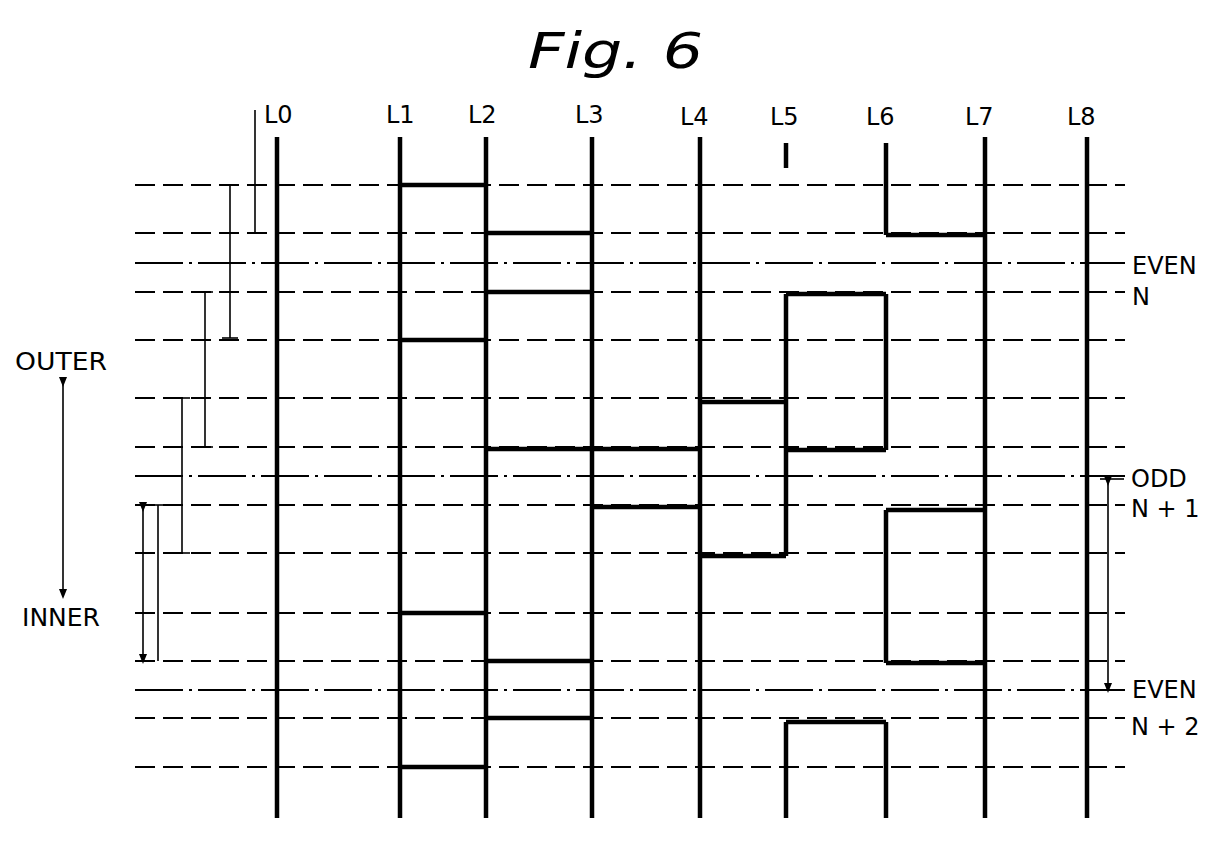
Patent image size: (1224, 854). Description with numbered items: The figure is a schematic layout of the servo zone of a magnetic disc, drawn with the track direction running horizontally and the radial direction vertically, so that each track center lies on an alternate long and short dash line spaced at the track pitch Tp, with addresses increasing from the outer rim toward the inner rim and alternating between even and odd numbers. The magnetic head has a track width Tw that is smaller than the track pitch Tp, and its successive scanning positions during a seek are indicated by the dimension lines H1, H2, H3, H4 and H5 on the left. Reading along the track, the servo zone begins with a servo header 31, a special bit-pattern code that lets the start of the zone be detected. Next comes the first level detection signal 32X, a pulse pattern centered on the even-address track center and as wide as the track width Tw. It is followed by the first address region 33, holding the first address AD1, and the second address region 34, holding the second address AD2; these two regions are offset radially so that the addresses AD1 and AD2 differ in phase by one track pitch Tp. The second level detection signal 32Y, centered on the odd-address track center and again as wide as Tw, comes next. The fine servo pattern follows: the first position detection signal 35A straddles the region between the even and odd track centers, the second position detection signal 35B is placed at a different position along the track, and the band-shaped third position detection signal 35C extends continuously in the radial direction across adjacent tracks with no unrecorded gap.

The servo header 31 is at (338, 477).
The first level detection signal 32X is at (443, 477).
The second level detection signal 32Y is at (743, 349).
The first address region 33 is at (539, 477).
The second address region 34 is at (646, 477).
The first position detection signal 35A is at (836, 556).
The second position detection signal 35B is at (935, 477).
The third position detection signal 35C is at (1050, 477).
The first address AD1 is at (539, 507).
The second address AD2 is at (646, 531).
The head scanning position H1 is at (255, 151).
The head scanning position H2 is at (230, 211).
The head scanning position H3 is at (205, 372).
The head scanning position H4 is at (182, 426).
The head scanning position H5 is at (160, 584).
The track width Tw is at (127, 583).
The track pitch Tp is at (1108, 584).